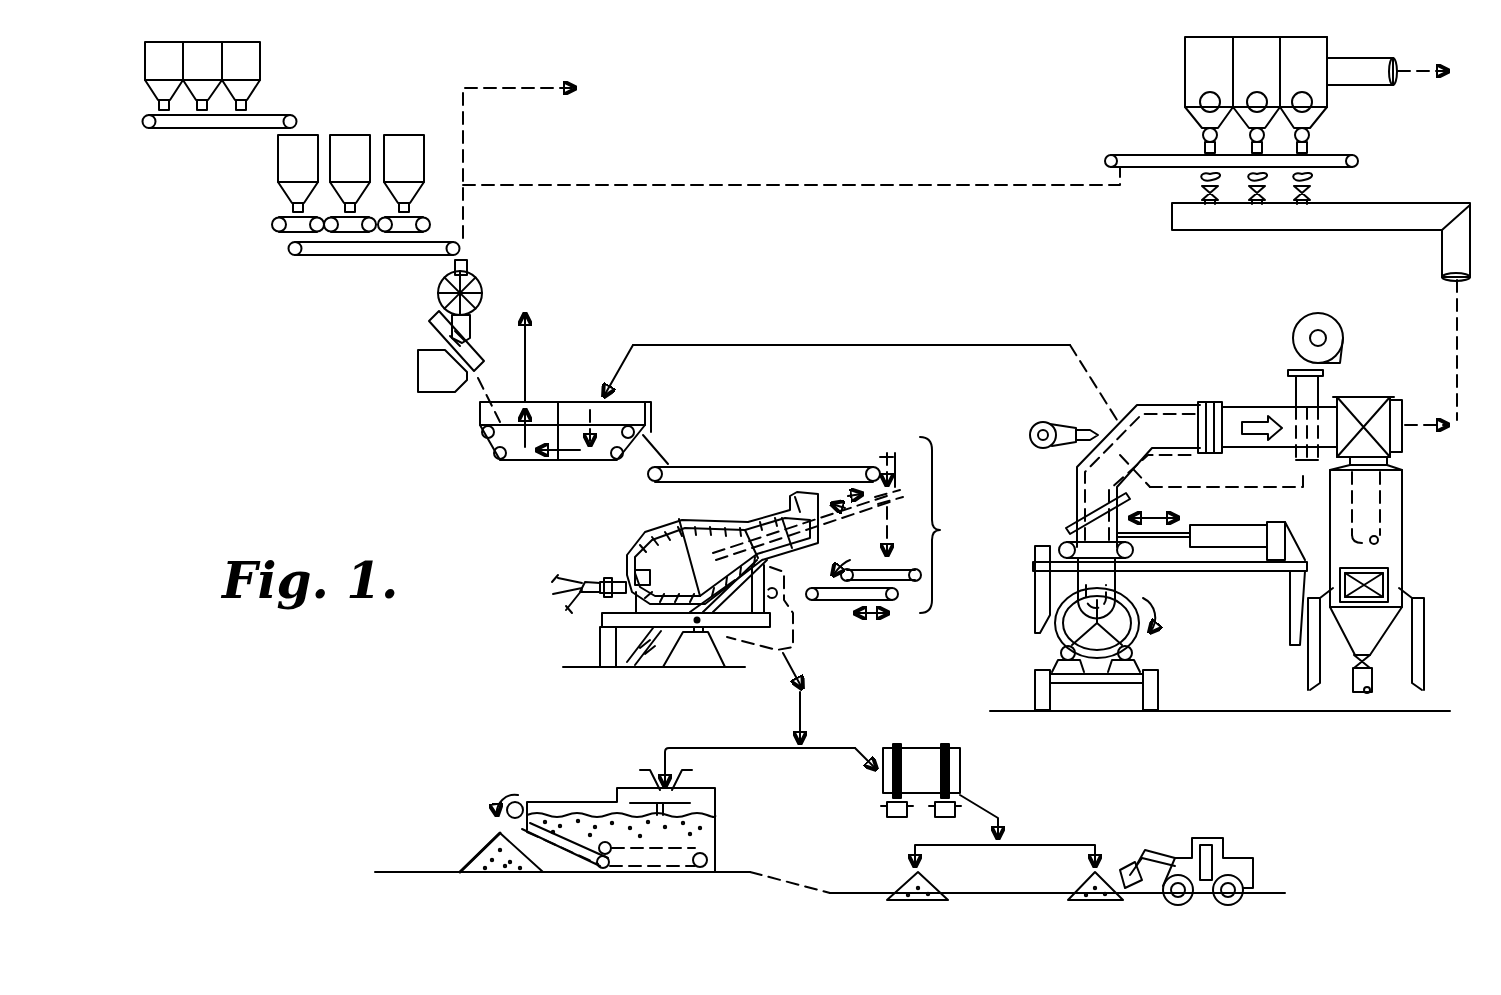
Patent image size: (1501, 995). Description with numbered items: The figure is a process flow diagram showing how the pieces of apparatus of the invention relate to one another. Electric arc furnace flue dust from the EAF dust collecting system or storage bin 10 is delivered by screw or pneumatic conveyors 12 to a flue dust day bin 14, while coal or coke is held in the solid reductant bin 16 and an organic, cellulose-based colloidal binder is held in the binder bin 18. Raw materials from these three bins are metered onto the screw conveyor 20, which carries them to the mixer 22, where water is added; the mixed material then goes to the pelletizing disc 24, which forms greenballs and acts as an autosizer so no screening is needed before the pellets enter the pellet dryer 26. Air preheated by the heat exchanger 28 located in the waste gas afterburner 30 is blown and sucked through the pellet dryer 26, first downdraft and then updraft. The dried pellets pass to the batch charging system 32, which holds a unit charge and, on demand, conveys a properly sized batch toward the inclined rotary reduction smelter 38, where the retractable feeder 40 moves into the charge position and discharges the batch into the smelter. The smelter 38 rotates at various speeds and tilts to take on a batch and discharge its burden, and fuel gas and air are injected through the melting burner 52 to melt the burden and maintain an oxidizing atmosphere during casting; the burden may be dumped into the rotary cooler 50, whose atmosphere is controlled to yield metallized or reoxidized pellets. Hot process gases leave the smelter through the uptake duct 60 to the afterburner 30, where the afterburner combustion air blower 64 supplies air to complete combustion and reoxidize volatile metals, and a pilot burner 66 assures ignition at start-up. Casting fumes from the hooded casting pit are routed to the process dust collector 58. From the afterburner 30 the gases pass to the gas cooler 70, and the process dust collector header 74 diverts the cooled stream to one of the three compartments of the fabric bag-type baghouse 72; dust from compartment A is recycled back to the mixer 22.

The EAF dust collecting system or storage bin 10 is at (212, 69).
The screw or pneumatic conveyors 12 is at (262, 112).
The flue dust day bin 14 is at (308, 167).
The solid reductant bin 16 is at (360, 167).
The binder bin 18 is at (414, 167).
The screw conveyor 20 is at (360, 258).
The mixer 22 is at (482, 300).
The pelletizing disc 24 is at (428, 322).
The pellet dryer 26 is at (490, 452).
The heat exchanger 28 is at (1295, 388).
The waste gas afterburner 30 is at (1167, 405).
The batch charging system 32 is at (950, 525).
The inclined rotary reduction smelter 38 is at (662, 530).
The retractable feeder 40 is at (855, 603).
The rotary cooler 50 is at (932, 781).
The melting burner 52 is at (566, 611).
The process dust collector 58 is at (1185, 71).
The uptake duct 60 is at (1077, 492).
The afterburner combustion air blower 64 is at (1072, 427).
The pilot burner 66 is at (1264, 418).
The gas cooler 70 is at (1362, 397).
The process dust collector (baghouse) 72 is at (1300, 37).
The process dust collector header 74 is at (1330, 230).